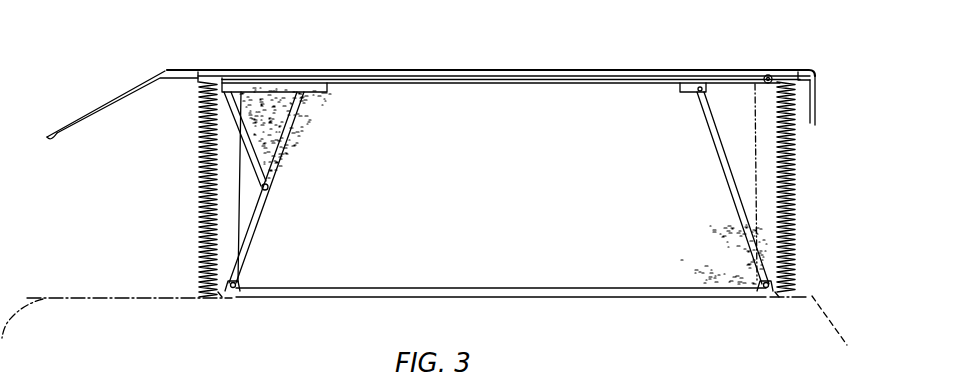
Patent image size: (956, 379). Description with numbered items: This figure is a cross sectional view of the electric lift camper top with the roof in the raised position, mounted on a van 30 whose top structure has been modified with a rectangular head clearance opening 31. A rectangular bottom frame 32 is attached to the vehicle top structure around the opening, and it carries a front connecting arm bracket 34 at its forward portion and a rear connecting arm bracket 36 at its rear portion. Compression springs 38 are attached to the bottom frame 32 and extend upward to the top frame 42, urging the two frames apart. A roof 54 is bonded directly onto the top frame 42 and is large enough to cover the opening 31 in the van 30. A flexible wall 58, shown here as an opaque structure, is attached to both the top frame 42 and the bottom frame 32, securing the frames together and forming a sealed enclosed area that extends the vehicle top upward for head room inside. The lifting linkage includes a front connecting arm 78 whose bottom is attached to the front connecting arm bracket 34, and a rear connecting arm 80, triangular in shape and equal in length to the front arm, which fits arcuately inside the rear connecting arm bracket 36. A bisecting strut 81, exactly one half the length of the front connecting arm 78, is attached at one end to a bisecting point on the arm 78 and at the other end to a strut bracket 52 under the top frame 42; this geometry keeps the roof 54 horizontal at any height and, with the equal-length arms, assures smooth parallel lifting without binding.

The van 30 is at (27, 313).
The rectangular head clearance opening 31 is at (217, 306).
The bottom frame 32 is at (558, 297).
The front connecting arm bracket 34 is at (233, 305).
The rear connecting arm bracket 36 is at (763, 290).
The compression spring 38 is at (200, 100).
The top frame 42 is at (323, 72).
The bisecting strut bracket 52 is at (200, 136).
The roof 54 is at (670, 66).
The flexible wall 58 is at (510, 100).
The front connecting arm 78 is at (249, 214).
The rear connecting arm 80 is at (737, 188).
The bisecting strut 81 is at (242, 160).